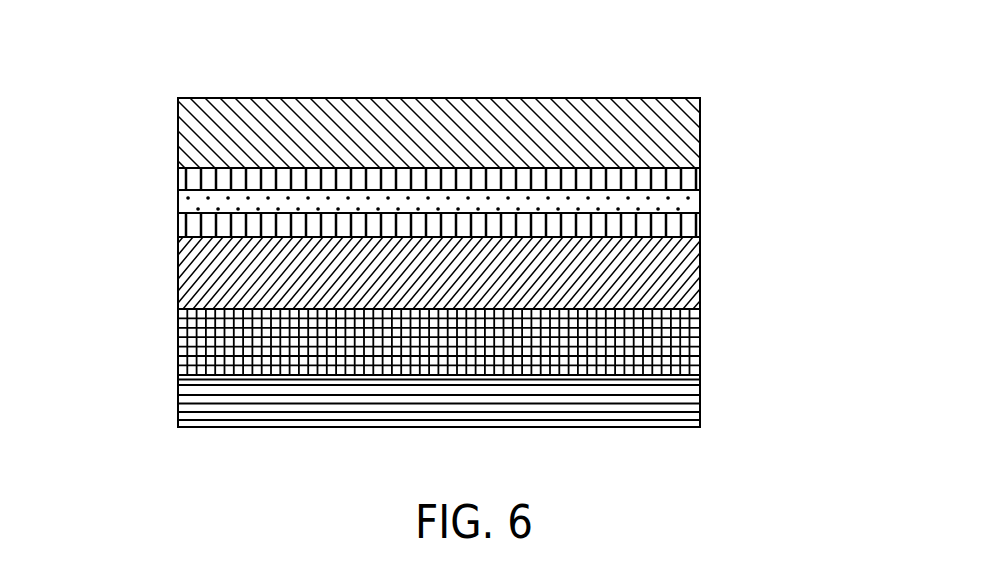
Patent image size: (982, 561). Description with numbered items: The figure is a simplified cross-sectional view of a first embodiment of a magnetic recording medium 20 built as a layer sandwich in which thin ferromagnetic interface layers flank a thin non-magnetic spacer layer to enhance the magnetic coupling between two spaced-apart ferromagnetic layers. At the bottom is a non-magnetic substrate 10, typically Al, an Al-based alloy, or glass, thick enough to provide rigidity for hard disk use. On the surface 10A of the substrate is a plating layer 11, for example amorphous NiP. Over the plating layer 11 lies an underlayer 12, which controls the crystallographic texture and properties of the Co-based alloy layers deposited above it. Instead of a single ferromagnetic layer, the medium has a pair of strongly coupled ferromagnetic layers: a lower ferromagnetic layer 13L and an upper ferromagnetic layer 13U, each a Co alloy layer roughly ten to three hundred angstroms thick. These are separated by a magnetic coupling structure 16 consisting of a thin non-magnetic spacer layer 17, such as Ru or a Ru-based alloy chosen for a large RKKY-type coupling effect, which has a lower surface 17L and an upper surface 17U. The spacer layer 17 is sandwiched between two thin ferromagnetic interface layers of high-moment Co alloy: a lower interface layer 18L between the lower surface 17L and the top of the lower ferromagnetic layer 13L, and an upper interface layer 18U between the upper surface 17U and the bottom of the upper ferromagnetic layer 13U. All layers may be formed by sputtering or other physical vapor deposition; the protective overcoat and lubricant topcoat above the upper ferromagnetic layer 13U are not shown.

The magnetic recording medium 20 is at (157, 118).
The upper ferromagnetic layer 13U is at (703, 117).
The upper interface layer 18U is at (703, 177).
The non-magnetic spacer layer 17 is at (435, 208).
The upper surface of spacer layer 17U is at (176, 191).
The lower surface of spacer layer 17L is at (391, 228).
The lower interface layer 18L is at (703, 226).
The magnetic coupling structure 16 is at (470, 203).
The lower ferromagnetic layer 13L is at (703, 282).
The underlayer 12 is at (703, 337).
The plating layer 11 is at (703, 377).
The non-magnetic substrate 10 is at (433, 393).
The substrate surface 10A is at (176, 378).